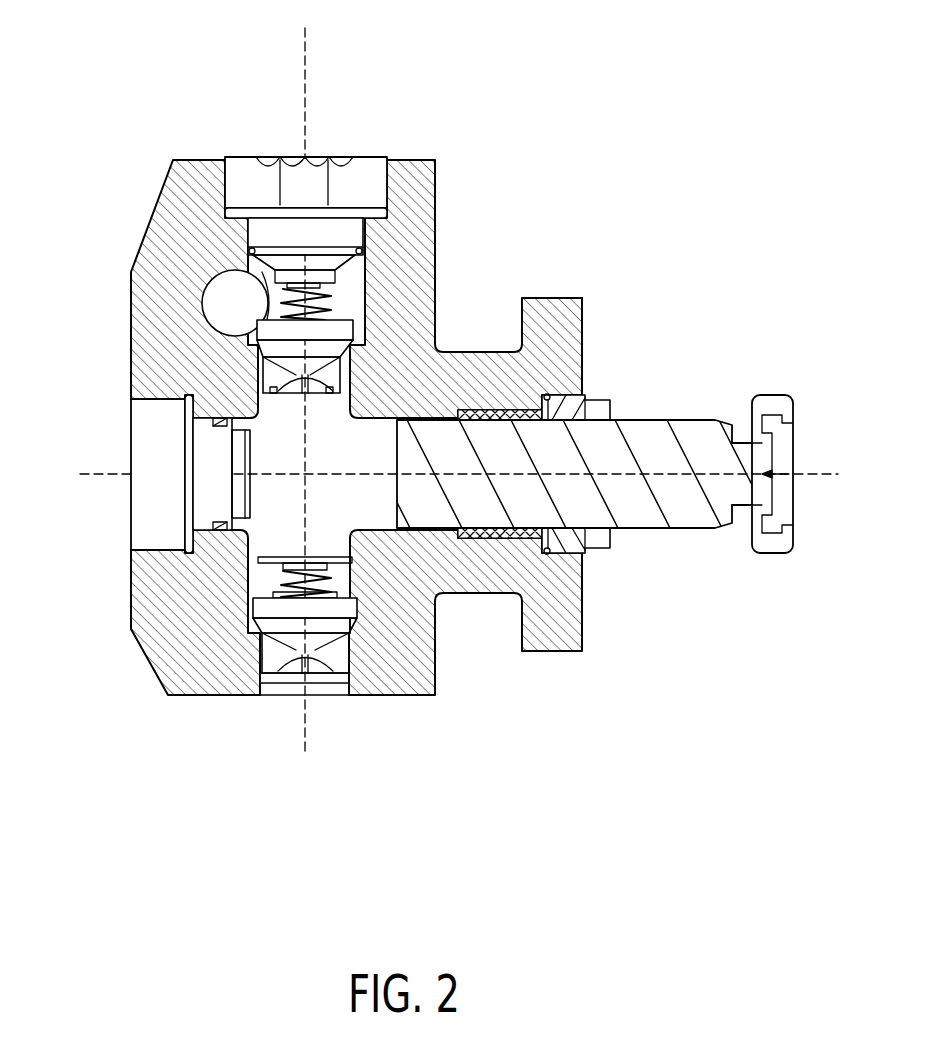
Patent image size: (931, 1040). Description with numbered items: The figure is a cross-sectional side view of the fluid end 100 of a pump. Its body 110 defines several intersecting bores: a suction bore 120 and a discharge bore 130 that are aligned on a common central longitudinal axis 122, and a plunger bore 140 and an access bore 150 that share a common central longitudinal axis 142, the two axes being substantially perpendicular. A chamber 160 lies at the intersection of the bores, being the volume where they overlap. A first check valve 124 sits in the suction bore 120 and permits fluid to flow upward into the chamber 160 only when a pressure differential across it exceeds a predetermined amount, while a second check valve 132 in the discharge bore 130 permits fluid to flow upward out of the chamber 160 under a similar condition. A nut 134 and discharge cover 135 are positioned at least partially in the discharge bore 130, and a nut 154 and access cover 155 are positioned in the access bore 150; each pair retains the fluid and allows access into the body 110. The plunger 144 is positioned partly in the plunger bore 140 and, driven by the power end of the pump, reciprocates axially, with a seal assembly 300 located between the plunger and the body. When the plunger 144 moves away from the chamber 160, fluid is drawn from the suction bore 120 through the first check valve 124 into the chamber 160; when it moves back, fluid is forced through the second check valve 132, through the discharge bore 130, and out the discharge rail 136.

The fluid end 100 is at (112, 118).
The body 110 is at (143, 240).
The suction bore 120 is at (305, 702).
The central longitudinal axis 122 is at (307, 70).
The first check valve 124 is at (283, 612).
The discharge bore 130 is at (361, 241).
The second check valve 132 is at (343, 328).
The nut 134 is at (362, 183).
The discharge cover 135 is at (326, 230).
The discharge rail 136 is at (232, 300).
The plunger bore 140 is at (616, 416).
The central longitudinal axis 142 is at (723, 475).
The plunger 144 is at (642, 420).
The access bore 150 is at (135, 476).
The nut 154 is at (150, 500).
The access cover 155 is at (218, 453).
The chamber 160 is at (297, 461).
The seal assembly 300 is at (565, 392).